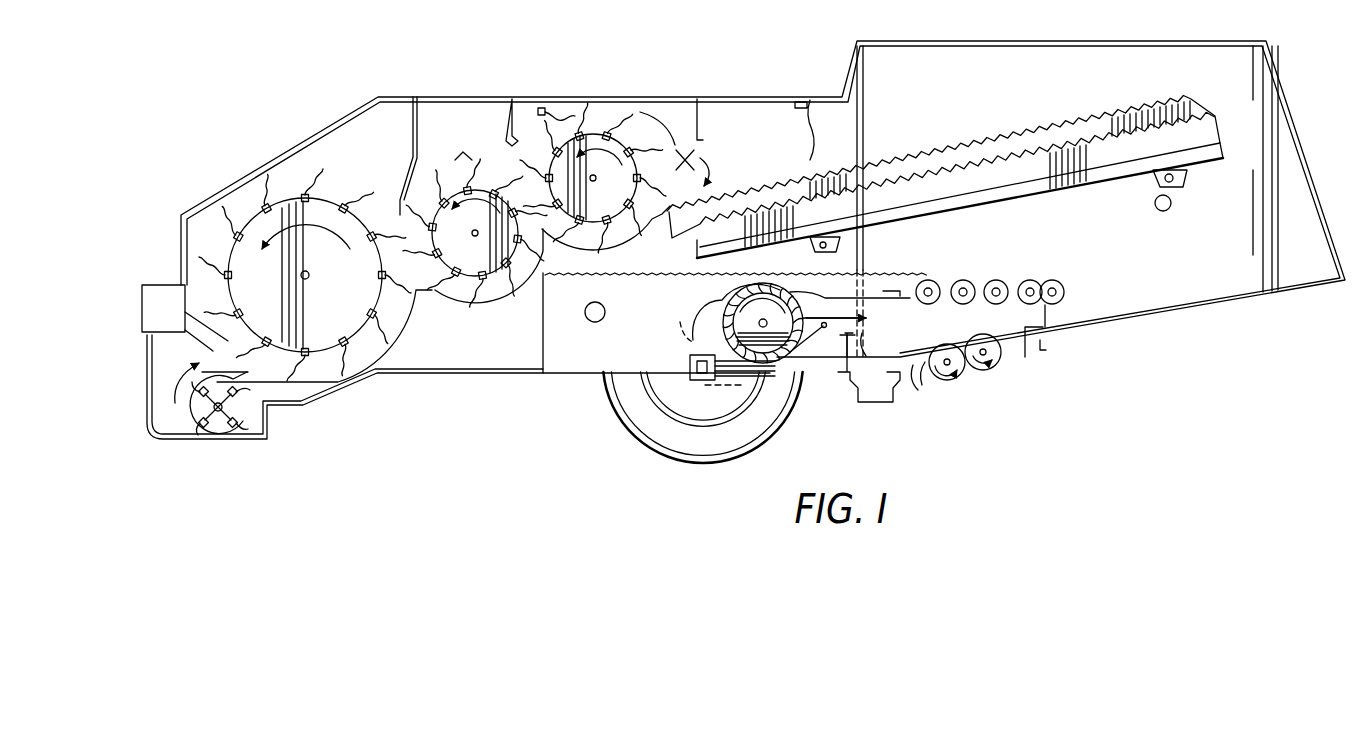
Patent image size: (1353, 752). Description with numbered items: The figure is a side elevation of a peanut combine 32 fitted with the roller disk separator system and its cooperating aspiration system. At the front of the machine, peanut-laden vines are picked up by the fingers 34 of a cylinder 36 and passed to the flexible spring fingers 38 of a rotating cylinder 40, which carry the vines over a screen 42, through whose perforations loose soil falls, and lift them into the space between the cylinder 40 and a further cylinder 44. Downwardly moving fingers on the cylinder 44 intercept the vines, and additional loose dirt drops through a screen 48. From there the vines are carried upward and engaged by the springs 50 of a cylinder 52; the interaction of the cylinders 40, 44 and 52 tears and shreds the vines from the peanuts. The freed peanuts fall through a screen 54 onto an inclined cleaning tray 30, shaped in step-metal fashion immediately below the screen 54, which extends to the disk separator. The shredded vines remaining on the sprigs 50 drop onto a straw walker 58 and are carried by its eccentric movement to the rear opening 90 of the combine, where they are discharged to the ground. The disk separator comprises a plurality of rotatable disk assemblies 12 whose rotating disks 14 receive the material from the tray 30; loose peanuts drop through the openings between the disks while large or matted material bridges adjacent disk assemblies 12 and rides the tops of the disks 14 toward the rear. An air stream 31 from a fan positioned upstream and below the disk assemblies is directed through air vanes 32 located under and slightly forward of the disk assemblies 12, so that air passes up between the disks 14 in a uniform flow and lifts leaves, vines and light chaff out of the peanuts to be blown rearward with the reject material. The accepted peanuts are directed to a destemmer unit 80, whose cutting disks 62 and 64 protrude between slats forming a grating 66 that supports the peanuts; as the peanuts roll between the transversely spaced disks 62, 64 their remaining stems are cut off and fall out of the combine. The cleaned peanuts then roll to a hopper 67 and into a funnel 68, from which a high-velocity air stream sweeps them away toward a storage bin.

The rotatable disk assemblies 12 is at (997, 276).
The rotating disks 14 is at (1052, 282).
The inclined cleaning tray 30 is at (655, 280).
The air stream 31 is at (872, 341).
The air vanes 32 is at (308, 126).
The fingers 34 is at (187, 408).
The cylinder 36 is at (217, 434).
The flexible spring fingers 38 is at (262, 203).
The rotating cylinder 40 is at (320, 213).
The screen 42 is at (400, 330).
The cylinder 44 is at (472, 195).
The screen 48 is at (478, 296).
The springs 50 is at (577, 125).
The cylinder 52 is at (612, 133).
The screen 54 is at (640, 235).
The straw walker 58 is at (962, 158).
The cutting disk 62 is at (961, 379).
The cutting disk 64 is at (994, 366).
The grating 66 is at (920, 390).
The hopper 67 is at (876, 414).
The funnel 68 is at (846, 393).
The destemmer unit 80 is at (1026, 360).
The rear opening of the combine 90 is at (1203, 253).